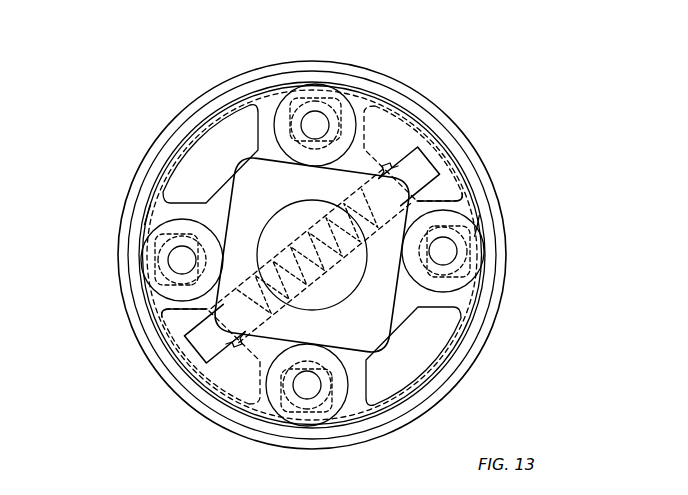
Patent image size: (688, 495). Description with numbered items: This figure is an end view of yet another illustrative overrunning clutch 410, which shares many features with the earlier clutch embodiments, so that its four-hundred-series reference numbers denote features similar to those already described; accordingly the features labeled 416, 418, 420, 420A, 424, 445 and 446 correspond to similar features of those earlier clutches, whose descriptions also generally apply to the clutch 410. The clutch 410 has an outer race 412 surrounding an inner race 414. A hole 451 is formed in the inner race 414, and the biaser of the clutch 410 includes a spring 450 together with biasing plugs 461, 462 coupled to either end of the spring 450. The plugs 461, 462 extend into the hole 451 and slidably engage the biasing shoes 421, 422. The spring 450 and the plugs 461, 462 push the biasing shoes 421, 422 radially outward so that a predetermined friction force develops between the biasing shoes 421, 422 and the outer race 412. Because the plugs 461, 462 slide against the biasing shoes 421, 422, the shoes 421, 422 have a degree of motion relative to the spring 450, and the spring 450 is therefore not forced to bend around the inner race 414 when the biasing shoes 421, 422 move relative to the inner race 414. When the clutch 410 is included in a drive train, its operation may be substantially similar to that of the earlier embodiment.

The overrunning clutch 410 is at (150, 100).
The outer race 412 is at (463, 122).
The inner race 414 is at (350, 163).
The inner ring 416 is at (257, 97).
The retainer cage 418 is at (268, 107).
The rollers 420 is at (337, 142).
The roller pockets 420A is at (312, 92).
The biasing shoe 421 is at (150, 302).
The biasing shoe 422 is at (463, 207).
The cage plate 424 is at (167, 207).
The housing ring 445 is at (417, 108).
The windows 446 is at (200, 150).
The spring 450 is at (330, 208).
The hole 451 is at (262, 285).
The biasing plug 461 is at (227, 320).
The biasing plug 462 is at (397, 183).